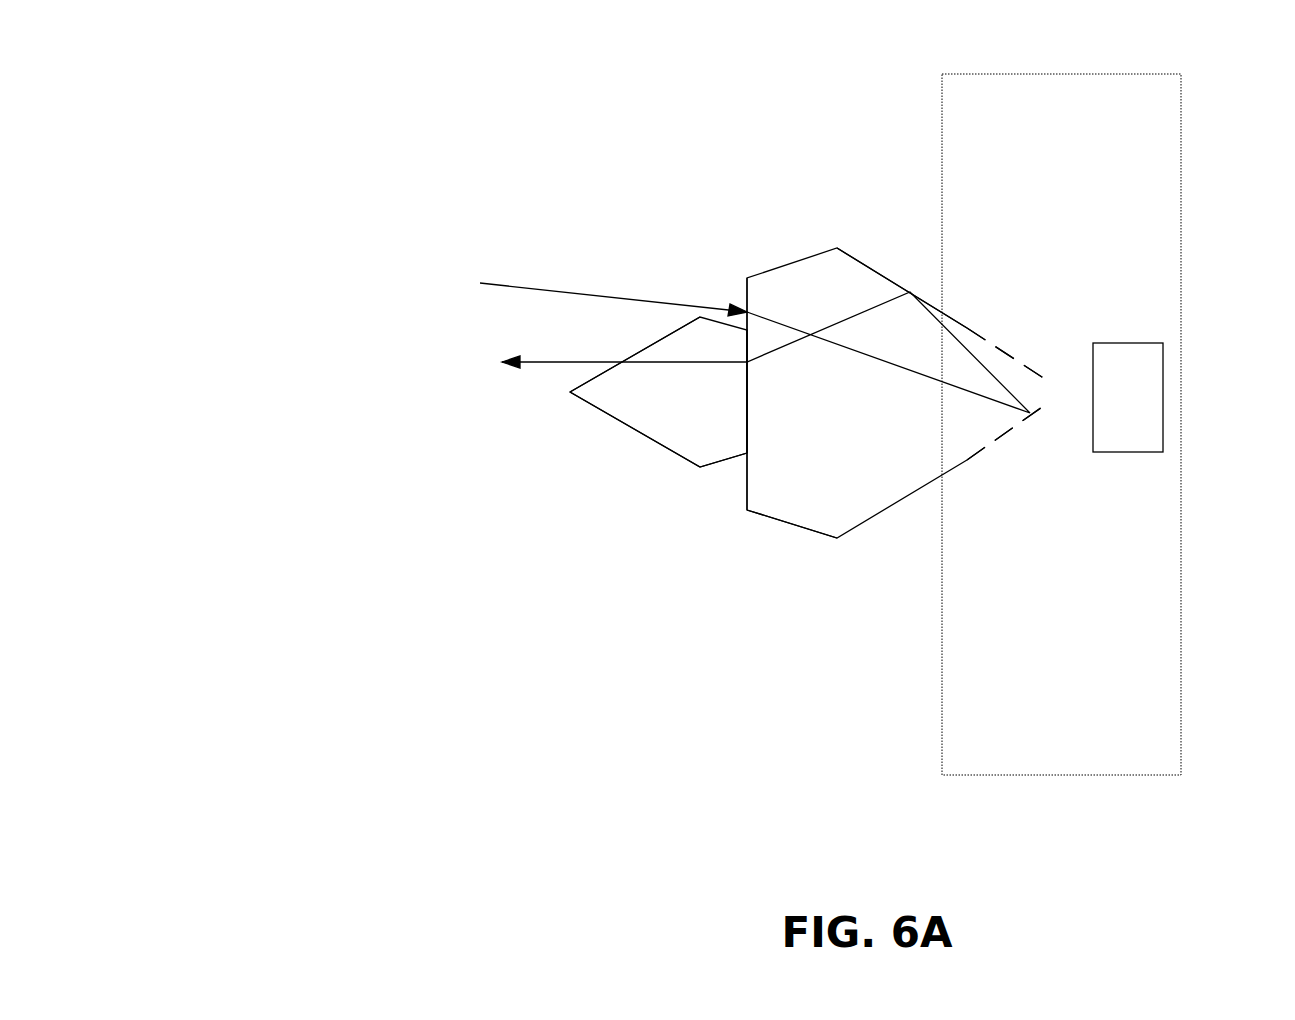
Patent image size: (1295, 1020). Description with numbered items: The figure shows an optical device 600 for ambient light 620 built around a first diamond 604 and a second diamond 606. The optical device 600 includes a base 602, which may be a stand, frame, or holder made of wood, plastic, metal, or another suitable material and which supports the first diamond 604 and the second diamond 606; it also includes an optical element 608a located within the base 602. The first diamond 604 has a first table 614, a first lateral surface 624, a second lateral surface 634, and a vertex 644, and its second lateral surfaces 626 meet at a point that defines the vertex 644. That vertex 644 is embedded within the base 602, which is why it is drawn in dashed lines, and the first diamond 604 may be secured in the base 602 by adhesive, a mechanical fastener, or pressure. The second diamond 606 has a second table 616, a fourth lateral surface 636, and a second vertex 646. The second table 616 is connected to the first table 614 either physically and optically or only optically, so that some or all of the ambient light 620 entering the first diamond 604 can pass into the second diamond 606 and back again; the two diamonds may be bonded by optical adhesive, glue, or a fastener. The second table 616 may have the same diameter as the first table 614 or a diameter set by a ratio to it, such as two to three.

The optical assembly 600 is at (226, 75).
The base 602 is at (1043, 137).
The diamond 604 is at (822, 416).
The diamond 606 is at (670, 415).
The component 608a is at (1102, 410).
The facet 614 is at (747, 510).
The facet 616 is at (747, 413).
The light beam 620 is at (722, 310).
The facet 624 is at (825, 535).
The facet 626 is at (747, 453).
The facet 634 is at (862, 262).
The facet 636 is at (603, 412).
The tip 644 is at (1062, 392).
The facet 646 is at (570, 392).